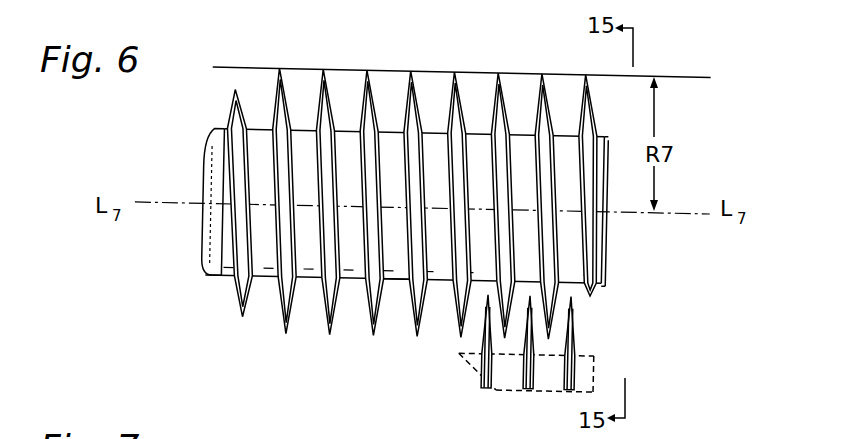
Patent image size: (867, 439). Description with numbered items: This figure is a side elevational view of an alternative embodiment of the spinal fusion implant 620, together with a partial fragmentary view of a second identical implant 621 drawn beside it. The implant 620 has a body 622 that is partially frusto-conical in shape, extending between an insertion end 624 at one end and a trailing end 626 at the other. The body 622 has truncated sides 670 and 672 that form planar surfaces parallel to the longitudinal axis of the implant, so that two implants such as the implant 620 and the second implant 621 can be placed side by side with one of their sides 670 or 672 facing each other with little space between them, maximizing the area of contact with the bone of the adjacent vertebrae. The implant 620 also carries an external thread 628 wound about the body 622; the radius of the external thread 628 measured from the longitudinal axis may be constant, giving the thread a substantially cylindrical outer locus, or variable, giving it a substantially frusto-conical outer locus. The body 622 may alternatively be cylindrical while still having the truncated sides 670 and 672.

The spinal fusion implant 620 is at (420, 201).
The second identical implant 621 is at (600, 338).
The body 622 is at (312, 283).
The insertion end 624 is at (222, 282).
The trailing end 626 is at (607, 237).
The external thread 628 is at (412, 174).
The truncated side 670 is at (404, 283).
The truncated side 672 is at (386, 124).